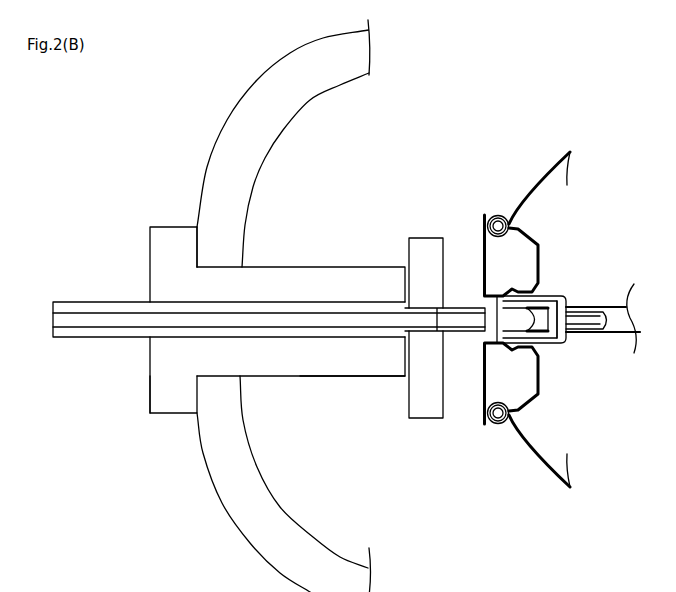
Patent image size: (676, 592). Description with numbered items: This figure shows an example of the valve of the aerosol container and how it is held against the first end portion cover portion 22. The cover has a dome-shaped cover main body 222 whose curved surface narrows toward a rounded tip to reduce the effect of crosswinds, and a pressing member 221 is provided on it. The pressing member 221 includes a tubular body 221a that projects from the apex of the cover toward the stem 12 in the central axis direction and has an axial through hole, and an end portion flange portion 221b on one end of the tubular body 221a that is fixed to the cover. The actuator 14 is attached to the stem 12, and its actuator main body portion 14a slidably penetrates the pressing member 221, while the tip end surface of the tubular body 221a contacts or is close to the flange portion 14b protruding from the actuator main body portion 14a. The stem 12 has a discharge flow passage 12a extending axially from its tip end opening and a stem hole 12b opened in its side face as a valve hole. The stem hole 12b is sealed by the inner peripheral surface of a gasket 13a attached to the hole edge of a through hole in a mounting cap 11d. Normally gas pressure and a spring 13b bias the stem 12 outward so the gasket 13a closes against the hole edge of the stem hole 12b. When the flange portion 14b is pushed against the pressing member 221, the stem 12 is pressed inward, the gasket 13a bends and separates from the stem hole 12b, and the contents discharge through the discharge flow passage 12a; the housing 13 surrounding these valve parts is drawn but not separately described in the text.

The mounting cap 11d is at (533, 183).
The stem 12 is at (482, 390).
The discharge flow passage 12a is at (462, 300).
The stem hole 12b is at (490, 308).
The housing 13 is at (567, 295).
The gasket 13a is at (487, 300).
The spring 13b is at (543, 298).
The actuator 14 is at (117, 301).
The actuator main body portion 14a is at (347, 338).
The flange portion 14b is at (408, 240).
The first end portion cover portion 22 is at (221, 502).
The pressing member 221 is at (153, 223).
The tubular body 221a is at (280, 267).
The end portion flange portion 221b is at (148, 390).
The cover main body 222 is at (200, 450).